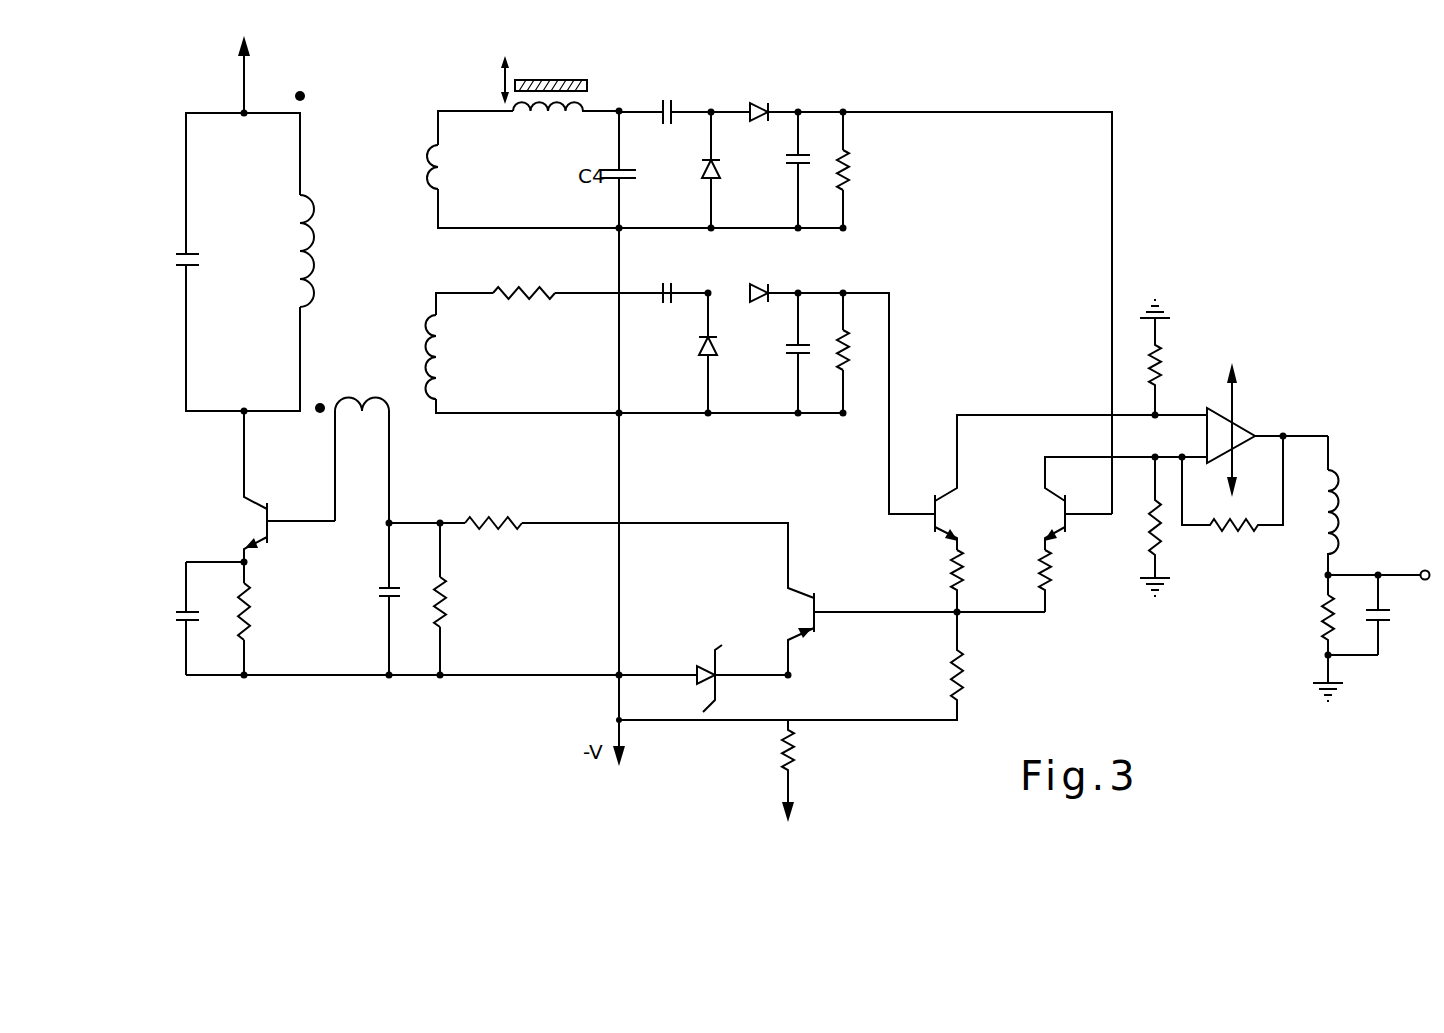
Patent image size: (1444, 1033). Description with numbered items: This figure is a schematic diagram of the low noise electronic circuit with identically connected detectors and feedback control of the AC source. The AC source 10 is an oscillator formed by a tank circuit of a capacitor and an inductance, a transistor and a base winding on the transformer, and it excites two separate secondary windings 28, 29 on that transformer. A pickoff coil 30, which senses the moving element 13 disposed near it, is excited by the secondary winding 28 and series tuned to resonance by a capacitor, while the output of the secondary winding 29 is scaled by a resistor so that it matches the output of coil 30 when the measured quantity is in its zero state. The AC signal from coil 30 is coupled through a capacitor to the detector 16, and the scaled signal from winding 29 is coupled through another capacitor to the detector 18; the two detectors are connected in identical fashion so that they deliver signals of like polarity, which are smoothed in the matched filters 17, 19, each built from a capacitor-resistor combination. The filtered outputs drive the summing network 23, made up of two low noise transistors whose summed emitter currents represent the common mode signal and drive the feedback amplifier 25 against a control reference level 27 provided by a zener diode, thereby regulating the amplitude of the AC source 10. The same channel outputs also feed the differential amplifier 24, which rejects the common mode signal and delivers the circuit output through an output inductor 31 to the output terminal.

The AC source 10 is at (186, 459).
The moving element 13 is at (538, 78).
The pickoff coil 30 is at (585, 108).
The secondary winding 28 is at (446, 170).
The detector 16 is at (720, 92).
The filter 17 is at (858, 213).
The secondary winding 29 is at (428, 405).
The detector 18 is at (706, 283).
The filter 19 is at (855, 415).
The summing network 23 is at (940, 555).
The feedback amplifier 25 is at (797, 590).
The control reference level 27 is at (722, 645).
The differential amplifier 24 is at (1238, 428).
The output filter inductor 31 is at (1342, 515).